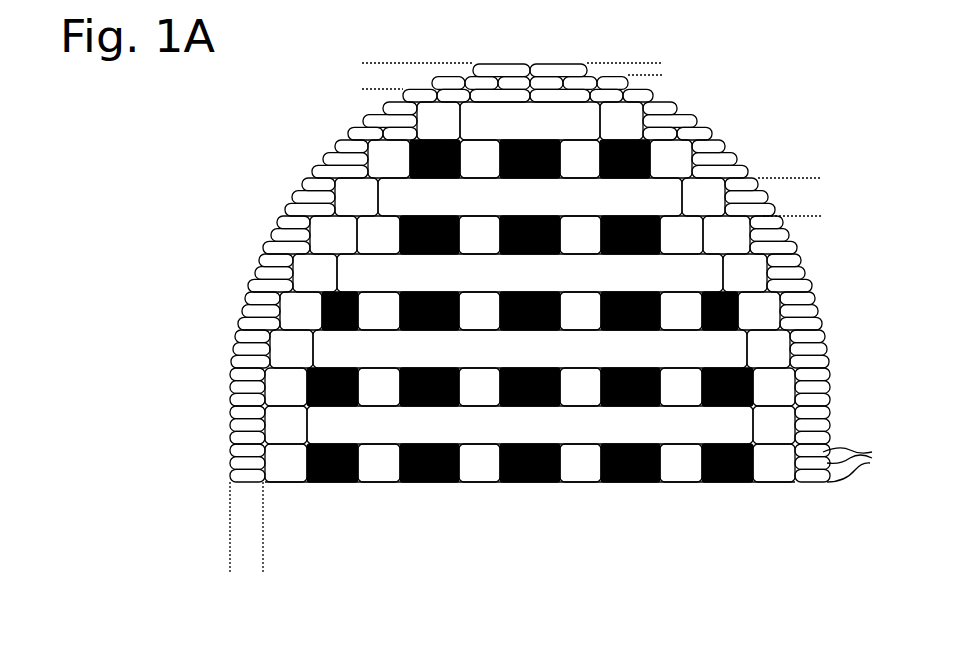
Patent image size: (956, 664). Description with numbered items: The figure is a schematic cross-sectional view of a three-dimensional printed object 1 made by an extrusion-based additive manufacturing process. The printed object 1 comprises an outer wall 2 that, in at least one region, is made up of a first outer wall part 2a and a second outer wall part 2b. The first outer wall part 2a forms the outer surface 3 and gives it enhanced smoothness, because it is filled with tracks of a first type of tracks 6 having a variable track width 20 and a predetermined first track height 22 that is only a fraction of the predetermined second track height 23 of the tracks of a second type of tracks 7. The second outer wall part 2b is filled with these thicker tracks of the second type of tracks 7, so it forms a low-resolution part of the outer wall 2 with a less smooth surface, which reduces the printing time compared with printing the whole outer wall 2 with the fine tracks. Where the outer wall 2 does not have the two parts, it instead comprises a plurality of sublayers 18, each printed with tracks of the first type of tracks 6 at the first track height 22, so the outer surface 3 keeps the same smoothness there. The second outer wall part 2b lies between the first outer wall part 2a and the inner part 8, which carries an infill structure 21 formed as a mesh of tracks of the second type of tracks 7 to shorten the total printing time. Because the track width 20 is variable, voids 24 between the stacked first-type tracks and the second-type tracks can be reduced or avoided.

The 3D printed object 1 is at (742, 87).
The outer wall 2 is at (308, 573).
The first outer wall part 2a is at (263, 520).
The second outer wall part 2b is at (308, 520).
The outer surface 3 is at (222, 347).
The tracks of a first type of tracks 6 is at (854, 463).
The tracks of a second type of tracks 7 is at (478, 483).
The inner part 8 is at (753, 482).
The sublayers 18 is at (366, 63).
The track width 20 is at (463, 89).
The infill structure 21 is at (633, 520).
The first track height 22 is at (663, 32).
The second track height 23 is at (818, 148).
The voids 24 is at (630, 460).